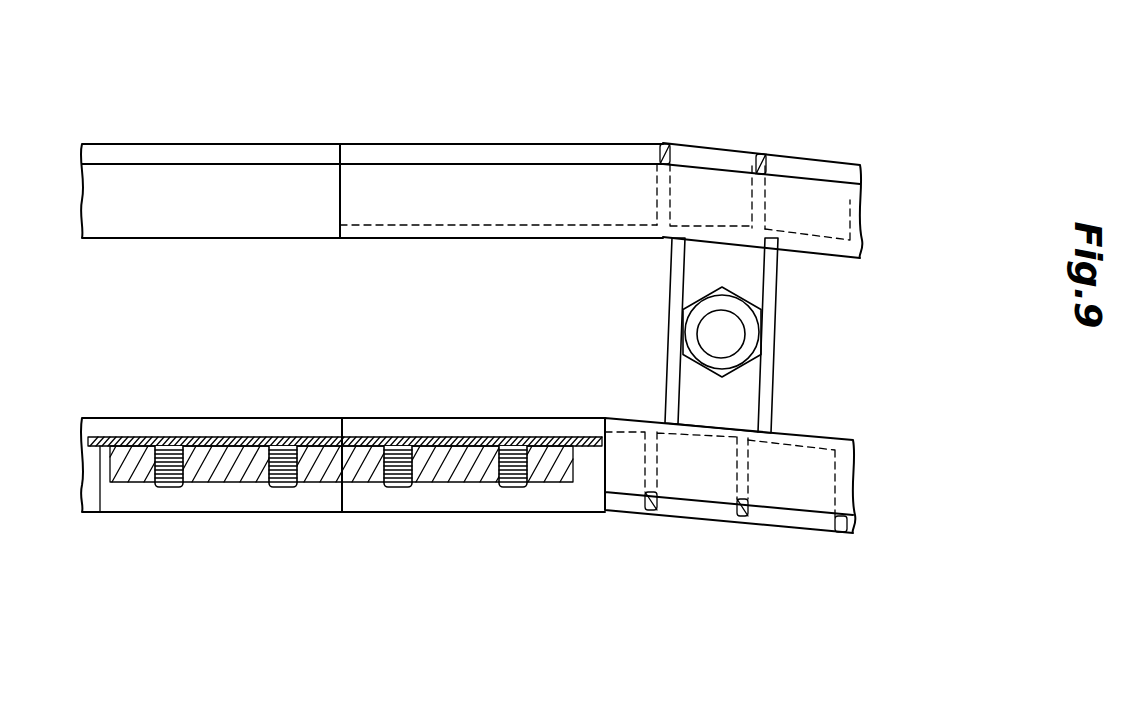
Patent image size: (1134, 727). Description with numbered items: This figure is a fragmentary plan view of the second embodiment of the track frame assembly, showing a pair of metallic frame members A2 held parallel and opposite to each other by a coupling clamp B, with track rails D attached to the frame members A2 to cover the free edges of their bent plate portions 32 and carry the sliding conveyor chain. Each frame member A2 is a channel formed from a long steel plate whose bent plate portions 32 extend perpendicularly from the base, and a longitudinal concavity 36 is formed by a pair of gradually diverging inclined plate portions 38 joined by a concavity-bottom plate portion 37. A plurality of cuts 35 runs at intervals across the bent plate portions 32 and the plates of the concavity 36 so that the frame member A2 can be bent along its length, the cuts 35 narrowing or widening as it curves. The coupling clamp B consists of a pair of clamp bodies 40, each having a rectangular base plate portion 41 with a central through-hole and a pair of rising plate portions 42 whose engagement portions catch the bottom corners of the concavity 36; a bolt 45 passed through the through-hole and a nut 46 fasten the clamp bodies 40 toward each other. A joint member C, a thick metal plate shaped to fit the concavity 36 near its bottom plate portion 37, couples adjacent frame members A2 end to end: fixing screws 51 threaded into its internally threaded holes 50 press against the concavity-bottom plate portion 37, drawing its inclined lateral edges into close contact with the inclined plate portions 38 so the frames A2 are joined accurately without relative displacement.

The bent plate portion 32 is at (840, 165).
The cut 35 is at (646, 145).
The concavity 36 is at (100, 512).
The concavity-bottom plate portion 37 is at (230, 437).
The inclined plate portion 38 is at (233, 490).
The clamp body 40 is at (668, 282).
The base plate portion 41 is at (690, 386).
The rising plate portion 42 is at (668, 398).
The bolt 45 is at (723, 337).
The nut 46 is at (745, 306).
The internally threaded hole 50 is at (395, 490).
The fixing screw 51 is at (283, 490).
The frame member A2 is at (170, 144).
The coupling clamp B is at (775, 318).
The joint member C is at (438, 487).
The track rail D is at (262, 200).